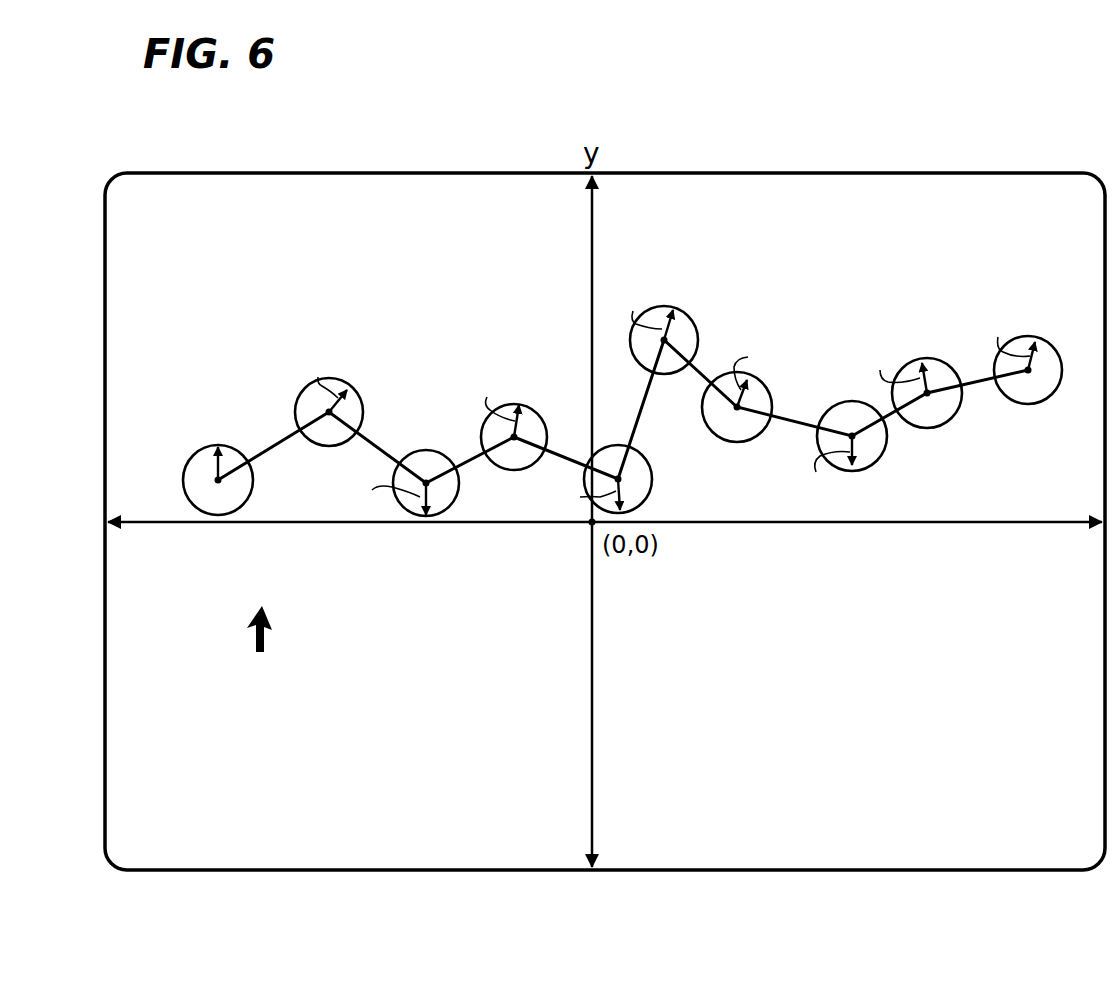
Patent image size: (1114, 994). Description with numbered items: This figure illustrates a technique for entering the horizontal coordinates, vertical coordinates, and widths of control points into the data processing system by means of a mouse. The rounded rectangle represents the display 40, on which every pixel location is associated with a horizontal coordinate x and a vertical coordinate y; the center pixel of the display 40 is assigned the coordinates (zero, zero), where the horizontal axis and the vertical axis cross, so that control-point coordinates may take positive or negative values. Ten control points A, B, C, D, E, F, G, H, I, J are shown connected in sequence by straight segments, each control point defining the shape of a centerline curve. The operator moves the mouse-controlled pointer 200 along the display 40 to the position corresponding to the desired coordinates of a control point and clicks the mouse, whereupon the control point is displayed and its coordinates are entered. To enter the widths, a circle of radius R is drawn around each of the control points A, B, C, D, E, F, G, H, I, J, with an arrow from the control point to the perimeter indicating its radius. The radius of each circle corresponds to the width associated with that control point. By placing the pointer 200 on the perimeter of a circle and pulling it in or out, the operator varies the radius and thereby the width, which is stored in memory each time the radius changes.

The display 40 is at (357, 167).
The pointer 200 is at (268, 640).
The control point A is at (224, 480).
The control point B is at (329, 411).
The control point C is at (417, 483).
The control point D is at (520, 417).
The control point E is at (608, 479).
The control point F is at (665, 328).
The control point G is at (749, 390).
The control point H is at (849, 450).
The control point I is at (919, 388).
The control point J is at (1022, 367).